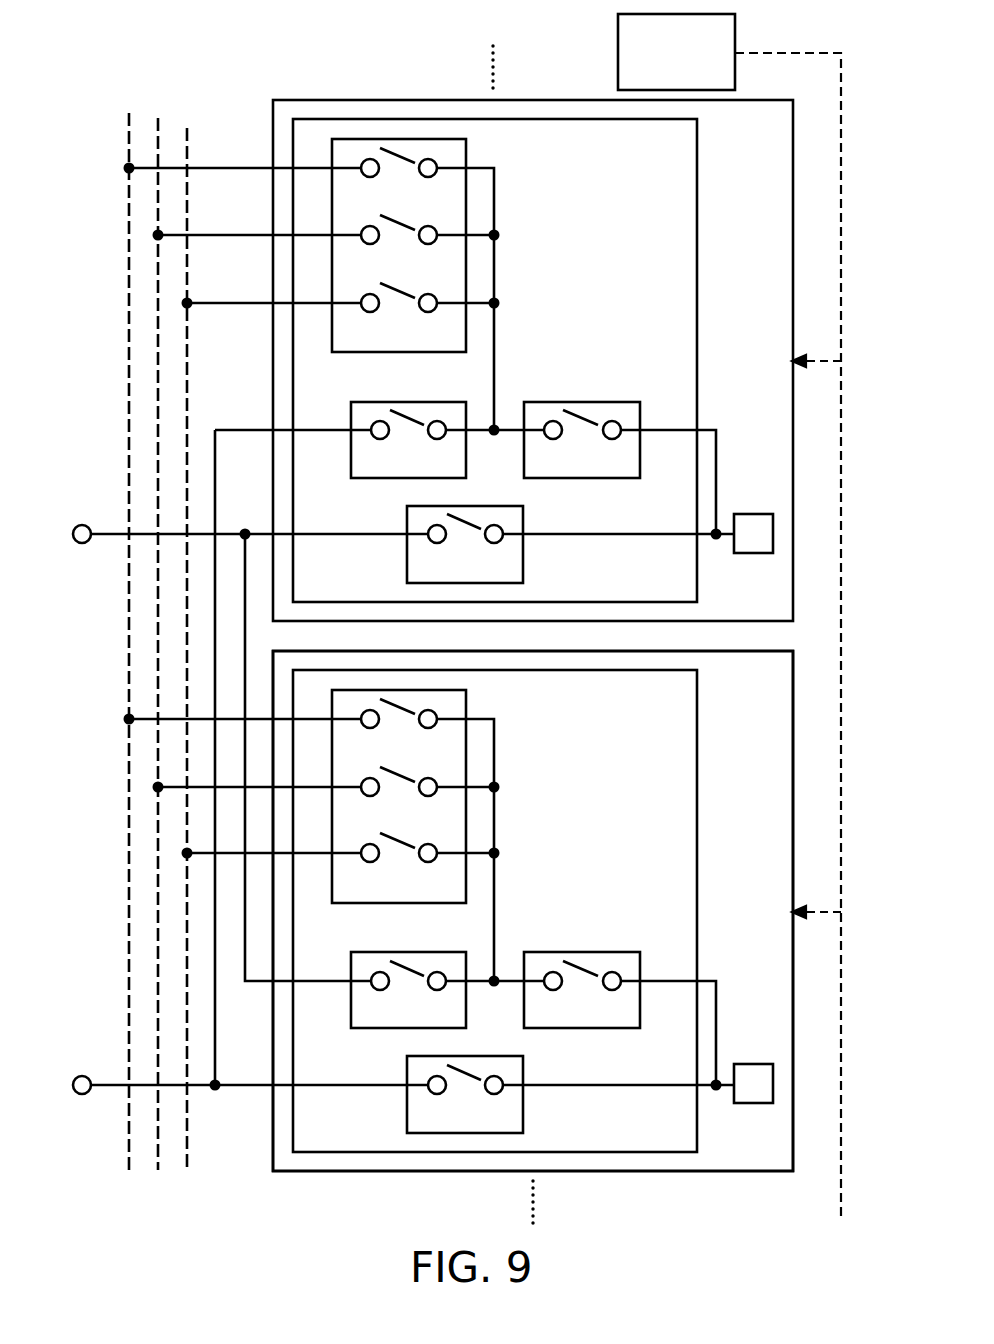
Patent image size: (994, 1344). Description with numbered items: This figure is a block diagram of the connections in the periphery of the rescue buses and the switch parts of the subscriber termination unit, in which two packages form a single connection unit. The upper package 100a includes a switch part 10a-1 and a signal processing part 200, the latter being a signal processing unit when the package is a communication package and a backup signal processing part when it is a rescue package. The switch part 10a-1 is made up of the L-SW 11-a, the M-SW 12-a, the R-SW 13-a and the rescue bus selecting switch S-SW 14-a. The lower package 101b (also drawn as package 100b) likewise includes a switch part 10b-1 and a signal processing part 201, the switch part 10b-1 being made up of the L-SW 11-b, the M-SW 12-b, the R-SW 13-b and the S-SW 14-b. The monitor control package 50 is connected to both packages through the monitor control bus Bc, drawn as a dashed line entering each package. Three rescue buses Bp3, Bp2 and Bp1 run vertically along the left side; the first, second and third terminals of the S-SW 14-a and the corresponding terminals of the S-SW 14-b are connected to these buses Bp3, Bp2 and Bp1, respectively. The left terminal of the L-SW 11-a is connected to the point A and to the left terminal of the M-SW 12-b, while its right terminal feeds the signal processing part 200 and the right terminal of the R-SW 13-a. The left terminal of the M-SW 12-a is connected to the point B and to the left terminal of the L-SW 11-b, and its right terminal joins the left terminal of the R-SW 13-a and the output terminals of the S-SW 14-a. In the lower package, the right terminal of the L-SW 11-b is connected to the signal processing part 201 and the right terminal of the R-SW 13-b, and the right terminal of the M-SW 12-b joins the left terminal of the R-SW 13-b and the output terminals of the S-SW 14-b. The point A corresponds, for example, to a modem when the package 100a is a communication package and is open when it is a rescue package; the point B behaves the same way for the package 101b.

The monitor control package 50 is at (618, 60).
The monitor control bus Bc is at (783, 52).
The rescue bus Bp1 is at (187, 148).
The rescue bus Bp2 is at (158, 118).
The rescue bus Bp3 is at (129, 113).
The package 100a is at (298, 100).
The switching unit b 100b is at (533, 911).
The package 101b is at (688, 1171).
The switch part 10a-1 is at (697, 273).
The switch part 10b-1 is at (697, 815).
The rescue bus selecting switch 14-a is at (478, 245).
The rescue bus selecting switch 14-b is at (466, 707).
The M-SW 12-a is at (351, 420).
The M-SW 12-b is at (351, 971).
The R-SW 13-a is at (525, 400).
The R-SW 13-b is at (525, 951).
The L-SW 11-a is at (523, 567).
The L-SW 11-b is at (523, 1118).
The signal processing part 200 is at (755, 514).
The signal processing part 201 is at (755, 1064).
The point A is at (394, 557).
The point B is at (394, 1107).